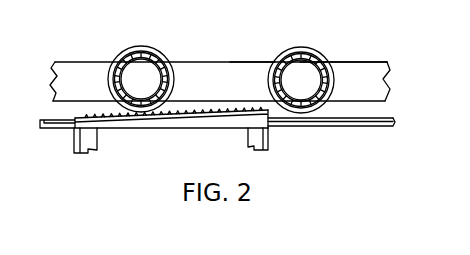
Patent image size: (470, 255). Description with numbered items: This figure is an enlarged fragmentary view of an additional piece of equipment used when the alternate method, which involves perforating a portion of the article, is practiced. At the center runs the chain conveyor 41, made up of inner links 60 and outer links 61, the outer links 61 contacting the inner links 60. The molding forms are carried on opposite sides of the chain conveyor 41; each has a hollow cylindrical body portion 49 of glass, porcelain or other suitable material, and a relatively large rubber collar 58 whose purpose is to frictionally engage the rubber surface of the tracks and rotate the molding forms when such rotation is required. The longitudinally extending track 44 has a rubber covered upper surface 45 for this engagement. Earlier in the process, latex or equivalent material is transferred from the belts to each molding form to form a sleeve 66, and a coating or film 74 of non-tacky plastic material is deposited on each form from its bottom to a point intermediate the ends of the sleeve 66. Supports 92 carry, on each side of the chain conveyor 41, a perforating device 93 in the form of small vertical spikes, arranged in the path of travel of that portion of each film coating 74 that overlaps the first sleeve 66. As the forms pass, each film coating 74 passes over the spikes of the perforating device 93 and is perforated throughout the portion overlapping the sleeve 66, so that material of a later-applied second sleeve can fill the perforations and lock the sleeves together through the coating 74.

The chain conveyor 41 is at (374, 55).
The track 44 is at (357, 126).
The rubber covered upper surface 45 is at (390, 117).
The hollow cylindrical body portion 49 is at (129, 63).
The rubber collar 58 is at (151, 47).
The inner links 60 is at (252, 62).
The outer links 61 is at (76, 67).
The sleeve 66 is at (140, 60).
The coating or film 74 is at (154, 60).
The supports 92 is at (172, 124).
The perforating device 93 is at (194, 105).